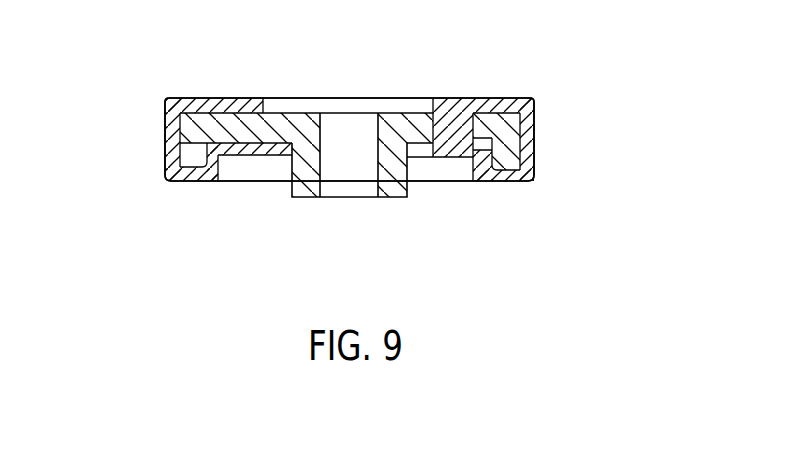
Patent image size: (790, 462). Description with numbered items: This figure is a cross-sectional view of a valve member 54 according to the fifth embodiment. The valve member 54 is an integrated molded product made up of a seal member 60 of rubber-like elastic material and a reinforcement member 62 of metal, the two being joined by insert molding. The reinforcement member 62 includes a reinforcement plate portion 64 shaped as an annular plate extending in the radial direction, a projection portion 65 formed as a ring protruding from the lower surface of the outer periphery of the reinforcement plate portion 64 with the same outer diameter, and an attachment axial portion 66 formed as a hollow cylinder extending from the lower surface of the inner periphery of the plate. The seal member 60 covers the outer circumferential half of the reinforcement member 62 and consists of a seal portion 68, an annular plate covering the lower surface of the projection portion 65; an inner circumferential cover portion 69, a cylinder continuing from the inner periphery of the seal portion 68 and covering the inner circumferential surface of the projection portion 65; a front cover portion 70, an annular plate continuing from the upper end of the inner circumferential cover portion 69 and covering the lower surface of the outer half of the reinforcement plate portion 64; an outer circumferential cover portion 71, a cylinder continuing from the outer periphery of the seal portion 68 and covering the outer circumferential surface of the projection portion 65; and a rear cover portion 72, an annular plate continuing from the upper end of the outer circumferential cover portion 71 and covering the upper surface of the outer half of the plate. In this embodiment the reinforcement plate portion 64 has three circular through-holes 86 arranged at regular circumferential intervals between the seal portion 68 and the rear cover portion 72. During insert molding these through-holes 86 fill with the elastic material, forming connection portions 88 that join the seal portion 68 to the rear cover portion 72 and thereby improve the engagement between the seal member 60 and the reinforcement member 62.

The valve member 54 is at (557, 107).
The seal member 60 is at (546, 155).
The reinforcement member 62 is at (396, 101).
The reinforcement plate portion 64 is at (276, 130).
The projection portion 65 is at (178, 158).
The attachment axial portion 66 is at (303, 198).
The seal portion 68 is at (182, 174).
The inner circumferential cover portion 69 is at (218, 180).
The front cover portion 70 is at (246, 152).
The outer circumferential cover portion 71 is at (180, 123).
The rear cover portion 72 is at (205, 104).
The through-holes 86 is at (462, 130).
The connection portions 88 is at (465, 122).